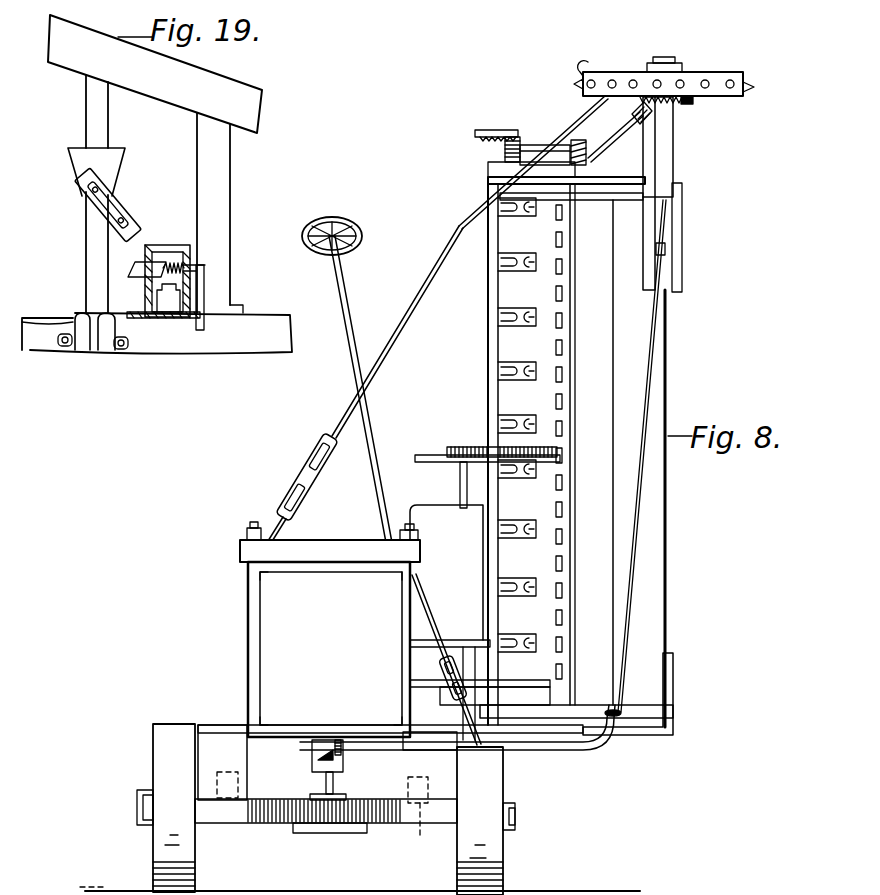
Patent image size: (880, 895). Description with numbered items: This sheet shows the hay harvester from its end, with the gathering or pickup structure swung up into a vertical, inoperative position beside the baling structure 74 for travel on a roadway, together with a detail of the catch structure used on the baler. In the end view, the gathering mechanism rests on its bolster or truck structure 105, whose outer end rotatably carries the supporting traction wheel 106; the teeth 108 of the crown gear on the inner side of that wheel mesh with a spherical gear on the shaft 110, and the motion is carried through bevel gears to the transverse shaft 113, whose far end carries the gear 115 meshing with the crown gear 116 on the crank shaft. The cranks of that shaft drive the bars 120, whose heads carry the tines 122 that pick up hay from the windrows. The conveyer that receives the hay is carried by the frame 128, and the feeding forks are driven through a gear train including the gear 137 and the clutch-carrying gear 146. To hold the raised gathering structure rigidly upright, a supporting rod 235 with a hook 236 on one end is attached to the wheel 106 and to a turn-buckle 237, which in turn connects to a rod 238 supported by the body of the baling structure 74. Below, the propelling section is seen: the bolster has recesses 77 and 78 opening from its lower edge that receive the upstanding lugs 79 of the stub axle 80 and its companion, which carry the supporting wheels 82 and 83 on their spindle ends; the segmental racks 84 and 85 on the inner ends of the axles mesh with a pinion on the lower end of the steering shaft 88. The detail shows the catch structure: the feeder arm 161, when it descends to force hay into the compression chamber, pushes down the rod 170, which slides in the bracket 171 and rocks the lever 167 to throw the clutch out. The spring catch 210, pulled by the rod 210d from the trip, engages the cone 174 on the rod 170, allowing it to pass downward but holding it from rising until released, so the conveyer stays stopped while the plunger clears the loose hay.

In FIG. 19, the feeder arm 161 is at (238, 101).
In FIG. 19, the rod 170 is at (92, 113).
In FIG. 19, the cone 174 is at (83, 168).
In FIG. 19, the lever 167 is at (133, 212).
In FIG. 19, the spring catch 210 is at (156, 266).
In FIG. 19, the rod 210d is at (206, 296).
In FIG. 19, the bracket 171 is at (107, 343).
In FIG. 8, the teeth 108 is at (692, 100).
In FIG. 8, the hook 236 is at (580, 71).
In FIG. 8, the supporting traction wheel 106 is at (723, 93).
In FIG. 8, the bolster or truck structure 105 is at (672, 163).
In FIG. 8, the crown gear 116 is at (476, 137).
In FIG. 8, the gear 115 is at (513, 143).
In FIG. 8, the shaft 113 is at (542, 150).
In FIG. 8, the shaft 110 is at (612, 133).
In FIG. 8, the supporting rod 235 is at (445, 247).
In FIG. 8, the turn-buckle 237 is at (303, 452).
In FIG. 8, the rod 238 is at (277, 513).
In FIG. 8, the bars 120 is at (498, 365).
In FIG. 8, the tines 122 is at (470, 368).
In FIG. 8, the gear 137 is at (523, 450).
In FIG. 8, the gear 146 is at (465, 447).
In FIG. 8, the baling structure 74 is at (260, 553).
In FIG. 8, the frame 128 is at (523, 593).
In FIG. 8, the recess 77 is at (223, 762).
In FIG. 8, the supporting wheel 83 is at (163, 840).
In FIG. 8, the supporting wheel 82 is at (488, 852).
In FIG. 8, the stub axle 80 is at (222, 815).
In FIG. 8, the segmental rack 84 is at (282, 823).
In FIG. 8, the segmental rack 85 is at (347, 827).
In FIG. 8, the shaft 88 is at (333, 780).
In FIG. 8, the recess 78 is at (428, 782).
In FIG. 8, the upstanding lugs 79 is at (213, 767).